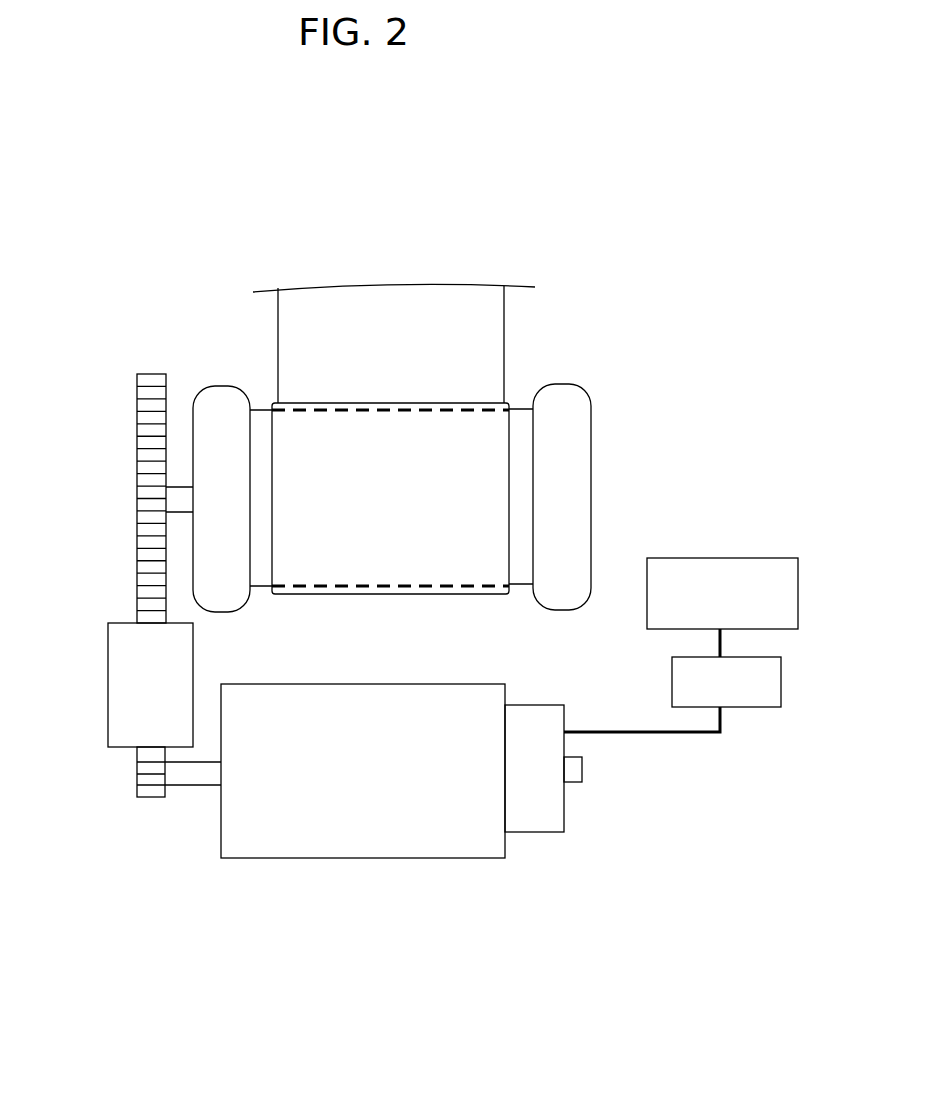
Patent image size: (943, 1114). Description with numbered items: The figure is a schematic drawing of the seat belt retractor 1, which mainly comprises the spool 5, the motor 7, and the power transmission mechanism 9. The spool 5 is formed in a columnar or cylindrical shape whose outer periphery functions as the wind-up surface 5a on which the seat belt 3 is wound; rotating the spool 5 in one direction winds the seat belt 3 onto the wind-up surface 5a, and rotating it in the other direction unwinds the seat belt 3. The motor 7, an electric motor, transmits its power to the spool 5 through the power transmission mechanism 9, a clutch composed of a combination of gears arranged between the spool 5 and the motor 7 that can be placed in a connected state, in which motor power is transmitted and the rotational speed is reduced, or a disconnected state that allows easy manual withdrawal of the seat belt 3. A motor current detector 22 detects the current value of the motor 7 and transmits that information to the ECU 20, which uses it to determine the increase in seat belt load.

The seat belt retractor 1 is at (183, 301).
The seat belt 3 is at (443, 315).
The spool 5 is at (586, 381).
The wind-up surface 5a is at (436, 552).
The motor 7 is at (367, 844).
The power transmission mechanism 9 is at (99, 665).
The ECU 20 is at (779, 555).
The motor current detector 22 is at (743, 683).